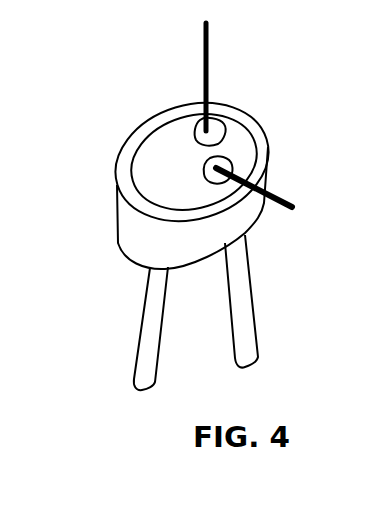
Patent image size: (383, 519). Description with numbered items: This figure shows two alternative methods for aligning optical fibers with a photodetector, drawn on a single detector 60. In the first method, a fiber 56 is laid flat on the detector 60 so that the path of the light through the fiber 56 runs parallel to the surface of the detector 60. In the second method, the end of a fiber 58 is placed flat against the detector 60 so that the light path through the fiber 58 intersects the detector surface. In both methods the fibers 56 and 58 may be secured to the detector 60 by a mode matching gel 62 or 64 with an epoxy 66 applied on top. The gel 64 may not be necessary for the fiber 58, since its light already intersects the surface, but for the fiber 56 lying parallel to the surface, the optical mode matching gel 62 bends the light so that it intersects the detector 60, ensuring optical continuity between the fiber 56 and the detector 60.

The fiber 56 is at (284, 208).
The fiber 58 is at (203, 65).
The detector 60 is at (163, 237).
The mode matching gel 62 is at (232, 164).
The mode matching gel 64 is at (226, 116).
The epoxy 66 is at (165, 165).